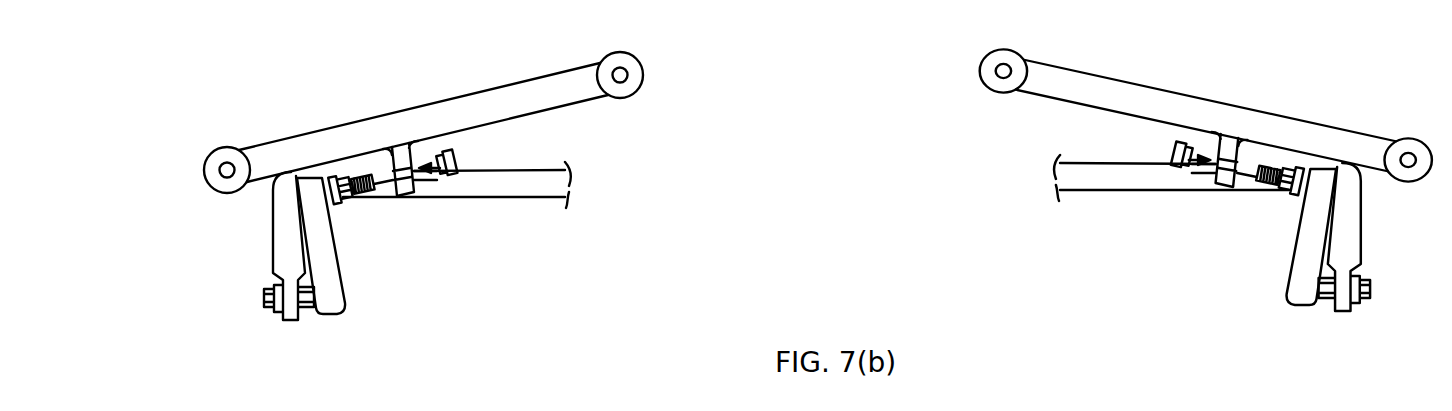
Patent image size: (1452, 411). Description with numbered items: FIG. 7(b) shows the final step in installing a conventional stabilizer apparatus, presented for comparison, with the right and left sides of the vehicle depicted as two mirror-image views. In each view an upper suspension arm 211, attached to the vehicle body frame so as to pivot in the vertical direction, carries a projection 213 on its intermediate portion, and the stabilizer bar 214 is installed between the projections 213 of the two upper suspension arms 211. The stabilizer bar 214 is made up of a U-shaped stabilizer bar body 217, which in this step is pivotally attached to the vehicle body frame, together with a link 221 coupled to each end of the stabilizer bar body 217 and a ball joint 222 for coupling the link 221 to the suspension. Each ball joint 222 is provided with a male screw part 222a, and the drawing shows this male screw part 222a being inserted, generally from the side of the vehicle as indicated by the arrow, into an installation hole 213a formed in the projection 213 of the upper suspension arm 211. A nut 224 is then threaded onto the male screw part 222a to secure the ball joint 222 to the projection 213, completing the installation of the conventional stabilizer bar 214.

The upper suspension arm 211 is at (477, 93).
The projection 213 is at (412, 144).
The installation hole 213a is at (427, 192).
The stabilizer bar 214 is at (272, 239).
The stabilizer bar body 217 is at (523, 200).
The link 221 is at (333, 250).
The ball joint 222 is at (331, 207).
The male screw part 222a is at (367, 200).
The nut 224 is at (460, 156).